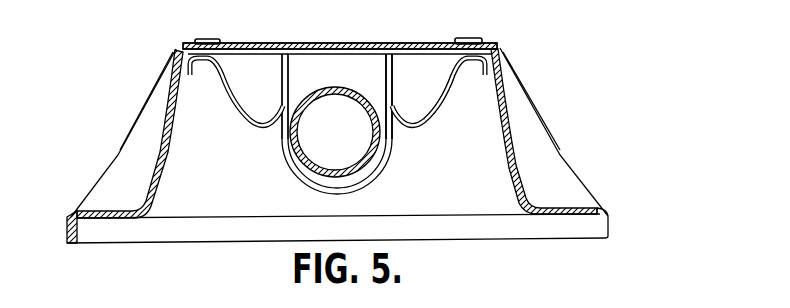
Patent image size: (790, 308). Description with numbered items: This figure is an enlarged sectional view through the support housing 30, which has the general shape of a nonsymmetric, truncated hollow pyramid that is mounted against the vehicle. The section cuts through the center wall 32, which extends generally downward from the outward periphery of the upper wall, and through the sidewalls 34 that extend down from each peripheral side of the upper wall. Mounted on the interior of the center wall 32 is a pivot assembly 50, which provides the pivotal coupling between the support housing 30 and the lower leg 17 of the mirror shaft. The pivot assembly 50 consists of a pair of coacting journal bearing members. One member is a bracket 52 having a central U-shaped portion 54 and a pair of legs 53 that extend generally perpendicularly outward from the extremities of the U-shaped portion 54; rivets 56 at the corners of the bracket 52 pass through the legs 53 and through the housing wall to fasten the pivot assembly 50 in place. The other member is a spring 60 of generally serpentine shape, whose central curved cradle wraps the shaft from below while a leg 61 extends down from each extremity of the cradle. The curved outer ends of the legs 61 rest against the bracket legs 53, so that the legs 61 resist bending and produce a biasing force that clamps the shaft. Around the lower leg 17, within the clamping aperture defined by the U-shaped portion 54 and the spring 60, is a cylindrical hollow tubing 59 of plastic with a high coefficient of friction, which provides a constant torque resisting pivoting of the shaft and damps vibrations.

The lower leg 17 is at (361, 161).
The support housing 30 is at (522, 80).
The center wall 32 is at (366, 27).
The sidewalls 34 is at (130, 133).
The pivot assembly 50 is at (438, 122).
The bracket 52 is at (460, 28).
The legs 53 is at (233, 47).
The U-shaped portion 54 is at (301, 178).
The rivets 56 is at (213, 41).
The tubing 59 is at (388, 161).
The spring 60 is at (238, 112).
The legs 61 is at (445, 96).